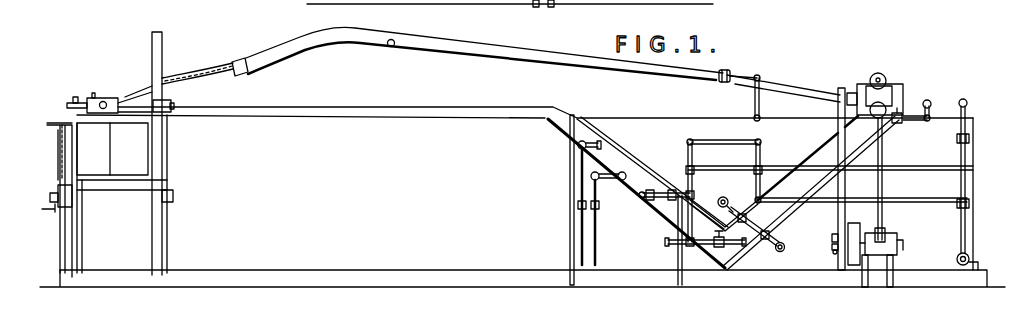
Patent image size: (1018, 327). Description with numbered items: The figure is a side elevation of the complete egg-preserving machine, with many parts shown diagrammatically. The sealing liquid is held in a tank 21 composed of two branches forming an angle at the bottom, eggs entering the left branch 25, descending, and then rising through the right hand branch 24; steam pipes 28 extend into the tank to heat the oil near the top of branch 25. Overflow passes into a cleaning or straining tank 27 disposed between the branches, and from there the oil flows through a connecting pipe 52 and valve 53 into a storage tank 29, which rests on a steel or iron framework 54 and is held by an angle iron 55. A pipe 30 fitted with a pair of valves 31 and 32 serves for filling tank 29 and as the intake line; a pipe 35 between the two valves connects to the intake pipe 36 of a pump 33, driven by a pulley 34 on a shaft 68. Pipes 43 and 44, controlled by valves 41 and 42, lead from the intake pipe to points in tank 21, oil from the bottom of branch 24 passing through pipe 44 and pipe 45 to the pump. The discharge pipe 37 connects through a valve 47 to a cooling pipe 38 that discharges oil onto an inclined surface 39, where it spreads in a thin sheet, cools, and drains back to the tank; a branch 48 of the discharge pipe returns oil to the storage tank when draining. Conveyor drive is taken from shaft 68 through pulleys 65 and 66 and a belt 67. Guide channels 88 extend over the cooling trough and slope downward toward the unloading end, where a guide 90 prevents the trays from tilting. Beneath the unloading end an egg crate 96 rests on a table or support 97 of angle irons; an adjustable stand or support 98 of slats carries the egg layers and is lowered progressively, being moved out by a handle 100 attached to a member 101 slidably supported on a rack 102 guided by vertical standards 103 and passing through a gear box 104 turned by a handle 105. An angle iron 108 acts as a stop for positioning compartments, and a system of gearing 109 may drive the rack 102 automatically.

The tank 21 is at (594, 139).
The right hand branch 24 is at (868, 142).
The left branch 25 is at (610, 157).
The cleaning or straining tank 27 is at (661, 139).
The steam pipes 28 is at (592, 187).
The storage tank 29 is at (923, 194).
The pipe 30 is at (960, 146).
The valve 31 is at (957, 138).
The valve 32 is at (957, 204).
The pump 33 is at (881, 240).
The pulley 34 is at (853, 256).
The pipe 35 is at (897, 166).
The intake pipe 36 is at (855, 198).
The discharge pipe 37 is at (883, 138).
The cooling pipe 38 is at (447, 50).
The inclined surface 39 is at (394, 44).
The valve 41 is at (670, 192).
The valve 42 is at (723, 242).
The pipe 43 is at (660, 192).
The pipe 44 is at (700, 245).
The pipe 45 is at (677, 223).
The valve 47 is at (727, 72).
The branch 48 is at (917, 117).
The connecting pipe 52 is at (784, 243).
The valve 53 is at (735, 207).
The framework 54 is at (645, 273).
The angle iron 55 is at (978, 265).
The pulley 65 is at (845, 87).
The pulley 66 is at (833, 252).
The belt 67 is at (838, 130).
The shaft 68 is at (835, 232).
The guide channels 88 is at (234, 68).
The guide 90 is at (203, 76).
The egg crate 96 is at (133, 150).
The table or support 97 is at (102, 182).
The stand or support 98 is at (58, 133).
The handle 100 is at (53, 122).
The member 101 is at (53, 126).
The rack 102 is at (58, 162).
The vertical standards 103 is at (60, 228).
The gear box 104 is at (58, 188).
The handle 105 is at (50, 198).
The angle iron 108 is at (153, 116).
The system of gearing 109 is at (167, 164).